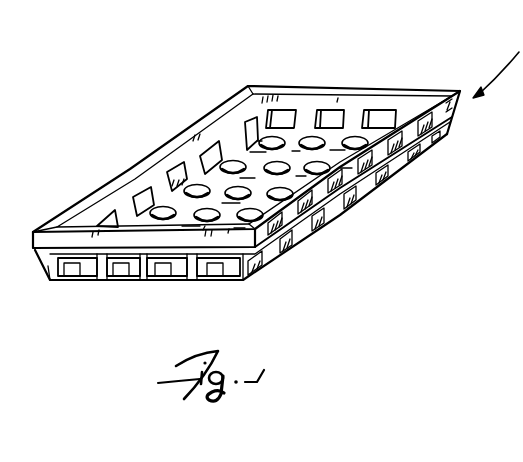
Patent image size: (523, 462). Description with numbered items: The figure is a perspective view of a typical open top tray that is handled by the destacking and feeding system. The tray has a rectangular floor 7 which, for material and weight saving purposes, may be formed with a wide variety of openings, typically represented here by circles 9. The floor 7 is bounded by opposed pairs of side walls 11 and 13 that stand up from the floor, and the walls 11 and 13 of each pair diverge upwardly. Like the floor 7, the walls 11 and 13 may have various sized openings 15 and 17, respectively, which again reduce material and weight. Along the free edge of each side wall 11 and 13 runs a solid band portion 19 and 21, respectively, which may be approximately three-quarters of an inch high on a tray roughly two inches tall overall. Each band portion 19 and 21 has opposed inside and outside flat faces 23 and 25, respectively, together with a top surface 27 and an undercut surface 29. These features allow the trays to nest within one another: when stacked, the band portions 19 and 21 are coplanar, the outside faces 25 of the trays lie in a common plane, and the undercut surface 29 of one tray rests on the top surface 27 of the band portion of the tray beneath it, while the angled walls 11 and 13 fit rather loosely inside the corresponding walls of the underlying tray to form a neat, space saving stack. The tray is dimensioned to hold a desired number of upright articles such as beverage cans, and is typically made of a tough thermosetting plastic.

The floor 7 is at (248, 87).
The circles 9 is at (200, 193).
The side wall 11 is at (352, 203).
The side wall 13 is at (197, 187).
The openings 15 is at (132, 180).
The openings 17 is at (173, 268).
The band portion 19 is at (97, 200).
The band portion 21 is at (50, 238).
The inside flat face 23 is at (103, 190).
The outside flat face 25 is at (447, 135).
The top surface 27 is at (65, 215).
The undercut surface 29 is at (97, 263).